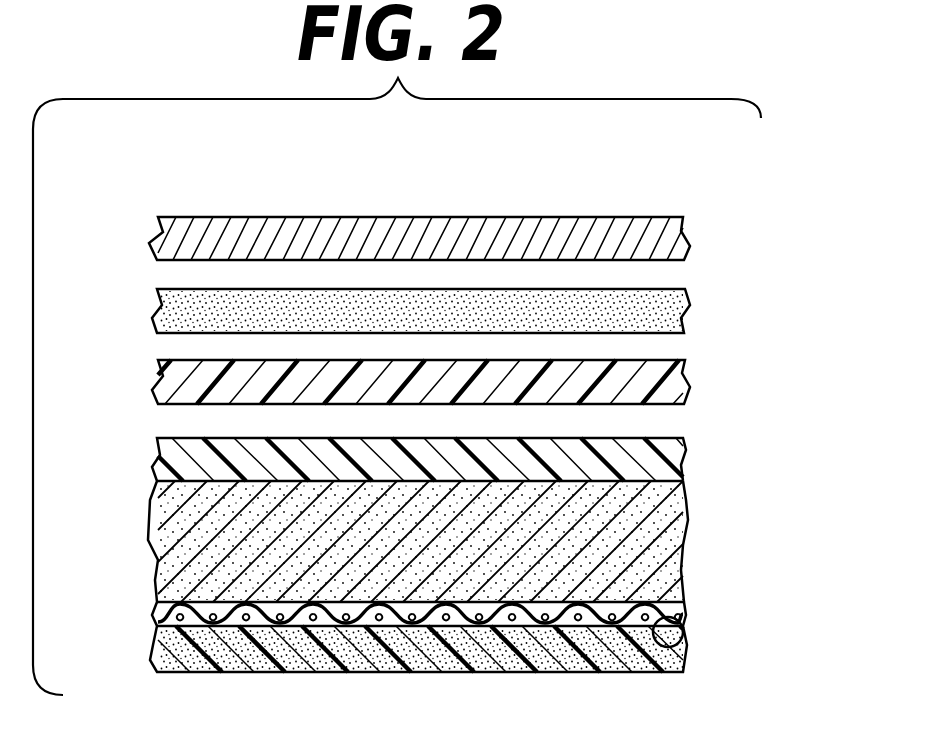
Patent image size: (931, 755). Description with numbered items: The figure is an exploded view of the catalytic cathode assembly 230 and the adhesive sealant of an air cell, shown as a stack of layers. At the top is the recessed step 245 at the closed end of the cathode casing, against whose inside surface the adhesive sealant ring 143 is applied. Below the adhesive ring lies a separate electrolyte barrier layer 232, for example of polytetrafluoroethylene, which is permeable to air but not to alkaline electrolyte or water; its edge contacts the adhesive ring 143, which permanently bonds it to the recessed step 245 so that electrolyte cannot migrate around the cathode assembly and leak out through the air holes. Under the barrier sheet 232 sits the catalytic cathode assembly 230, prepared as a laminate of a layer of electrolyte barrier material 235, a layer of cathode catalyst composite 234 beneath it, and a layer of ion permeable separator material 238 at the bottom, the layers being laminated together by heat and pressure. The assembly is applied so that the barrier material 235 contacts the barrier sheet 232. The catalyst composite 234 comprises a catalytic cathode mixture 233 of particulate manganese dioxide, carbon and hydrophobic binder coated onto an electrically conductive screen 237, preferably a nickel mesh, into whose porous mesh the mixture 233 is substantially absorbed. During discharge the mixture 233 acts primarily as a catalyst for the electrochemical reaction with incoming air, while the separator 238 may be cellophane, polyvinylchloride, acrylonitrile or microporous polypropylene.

The recessed step 245 is at (668, 238).
The adhesive sealant ring 143 is at (675, 318).
The electrolyte barrier layer 232 is at (677, 378).
The catalytic cathode assembly 230 is at (130, 435).
The electrolyte barrier material layer 235 is at (680, 460).
The catalytic cathode mixture 233 is at (668, 517).
The cathode catalyst composite 234 is at (697, 551).
The electrically conductive screen 237 is at (695, 650).
The ion permeable separator material 238 is at (634, 667).